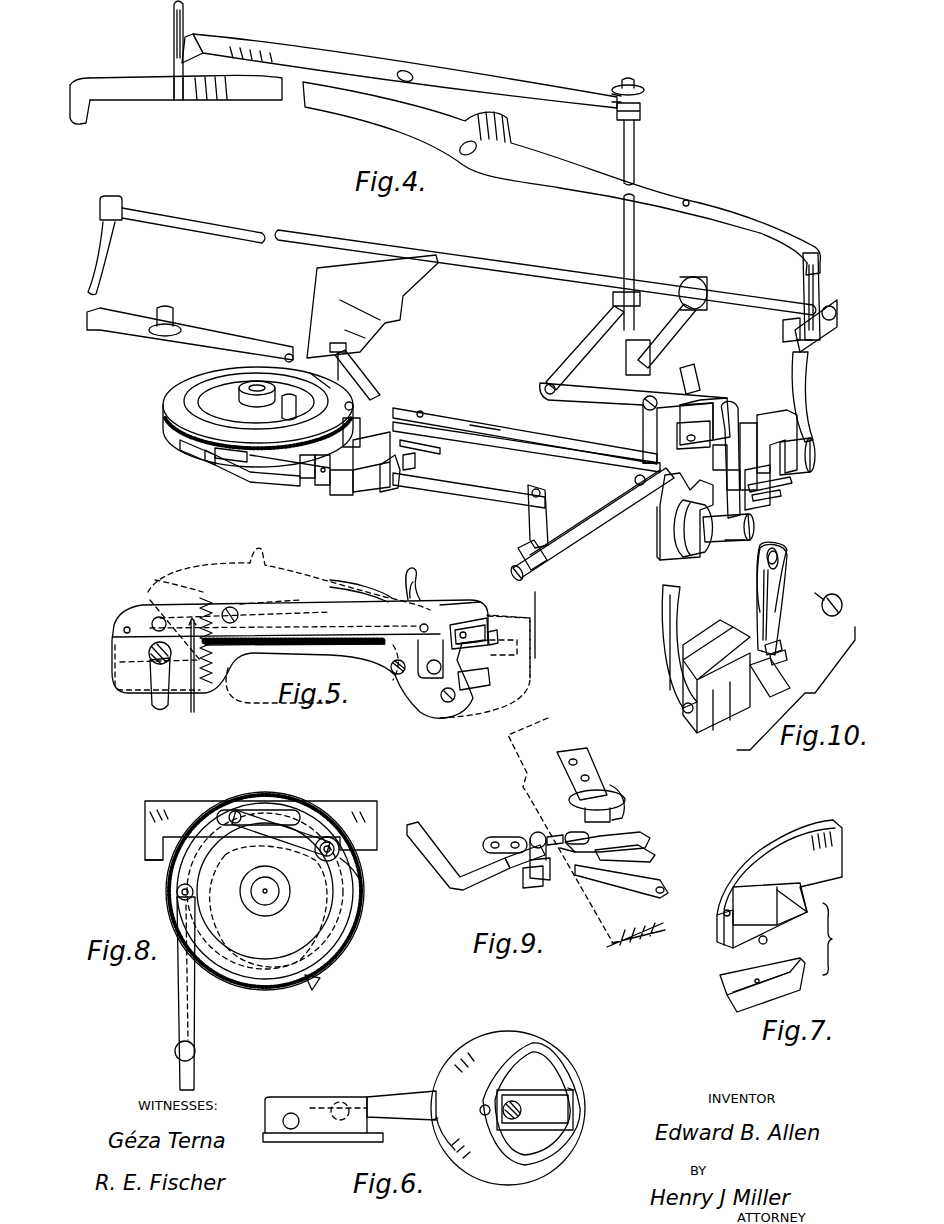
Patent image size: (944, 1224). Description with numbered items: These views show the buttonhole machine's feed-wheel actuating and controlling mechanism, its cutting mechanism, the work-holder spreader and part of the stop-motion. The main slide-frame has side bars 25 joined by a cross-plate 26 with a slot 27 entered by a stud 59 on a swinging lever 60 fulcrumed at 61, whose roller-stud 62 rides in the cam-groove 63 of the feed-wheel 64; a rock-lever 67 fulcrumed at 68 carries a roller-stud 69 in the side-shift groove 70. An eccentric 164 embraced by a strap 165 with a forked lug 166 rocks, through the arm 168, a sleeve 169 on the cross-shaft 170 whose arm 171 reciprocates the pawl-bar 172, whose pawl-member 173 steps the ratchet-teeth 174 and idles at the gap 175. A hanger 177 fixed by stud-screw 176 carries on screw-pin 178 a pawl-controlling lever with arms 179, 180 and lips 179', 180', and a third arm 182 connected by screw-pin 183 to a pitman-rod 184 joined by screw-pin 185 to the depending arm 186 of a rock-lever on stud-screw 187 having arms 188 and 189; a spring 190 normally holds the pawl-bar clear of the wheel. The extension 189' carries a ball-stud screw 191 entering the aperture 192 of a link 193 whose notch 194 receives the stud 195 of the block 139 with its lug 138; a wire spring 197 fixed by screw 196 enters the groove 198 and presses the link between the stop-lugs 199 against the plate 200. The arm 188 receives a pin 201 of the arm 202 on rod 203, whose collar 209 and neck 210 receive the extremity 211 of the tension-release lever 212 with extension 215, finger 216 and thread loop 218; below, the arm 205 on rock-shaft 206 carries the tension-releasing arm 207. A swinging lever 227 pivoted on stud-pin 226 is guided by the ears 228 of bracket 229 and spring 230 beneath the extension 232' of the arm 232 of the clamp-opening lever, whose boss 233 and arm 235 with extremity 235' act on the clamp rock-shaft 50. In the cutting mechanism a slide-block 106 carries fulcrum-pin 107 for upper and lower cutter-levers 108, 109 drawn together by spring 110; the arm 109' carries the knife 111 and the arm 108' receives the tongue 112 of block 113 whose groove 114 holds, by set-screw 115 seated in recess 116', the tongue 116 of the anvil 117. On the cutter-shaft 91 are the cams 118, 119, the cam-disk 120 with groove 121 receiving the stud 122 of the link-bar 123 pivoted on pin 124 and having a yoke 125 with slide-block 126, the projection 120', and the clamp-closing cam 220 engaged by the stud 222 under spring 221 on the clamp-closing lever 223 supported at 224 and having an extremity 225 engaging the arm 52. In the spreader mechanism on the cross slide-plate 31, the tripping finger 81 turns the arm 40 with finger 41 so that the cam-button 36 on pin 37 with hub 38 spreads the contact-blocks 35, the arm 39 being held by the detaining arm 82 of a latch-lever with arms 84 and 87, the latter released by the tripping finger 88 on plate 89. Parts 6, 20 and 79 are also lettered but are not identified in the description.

In FIG. 4, the thread-guiding loop 218 is at (172, 27).
In FIG. 4, the lateral extension 215 is at (193, 42).
In FIG. 4, the rock-lever 212 is at (462, 74).
In FIG. 4, the depending wedge-shaped finger 216 is at (178, 96).
In FIG. 4, the forwardly extending arm 235 is at (185, 96).
In FIG. 4, the downturned and rounded extremity 235' is at (94, 104).
In FIG. 4, the boss 233 is at (507, 125).
In FIG. 4, the rearward arm 232 is at (749, 214).
In FIG. 4, the lateral extension 232' is at (831, 261).
In FIG. 4, the collar 209 is at (650, 93).
In FIG. 4, the neck 210 is at (642, 110).
In FIG. 4, the rounded extremity 211 is at (617, 108).
In FIG. 4, the rod 203 is at (634, 262).
In FIG. 4, the rigid lateral arm 202 is at (590, 318).
In FIG. 4, the pin 201 is at (548, 383).
In FIG. 4, the rock-shaft 206 is at (310, 233).
In FIG. 4, the tension-releasing arm 207 is at (115, 238).
In FIG. 4, the lateral arm 205 is at (665, 326).
In FIG. 4, the side bars 25 is at (362, 267).
In FIG. 8, the side bars 25 is at (145, 855).
In FIG. 4, the cross-plate 26 is at (360, 306).
In FIG. 8, the cross-plate 26 is at (183, 802).
In FIG. 4, the fulcrum 68 is at (172, 308).
In FIG. 8, the fulcrum 68 is at (196, 1051).
In FIG. 4, the rock-lever 67 is at (230, 334).
In FIG. 8, the rock-lever 67 is at (178, 988).
In FIG. 4, the roller-stud 69 is at (290, 370).
In FIG. 8, the roller-stud 69 is at (178, 898).
In FIG. 4, the side-shift groove 70 is at (170, 387).
In FIG. 8, the side-shift groove 70 is at (232, 968).
In FIG. 4, the cam-groove 63 is at (205, 362).
In FIG. 8, the cam-groove 63 is at (232, 852).
In FIG. 4, the feed-wheel 64 is at (244, 395).
In FIG. 8, the feed-wheel 64 is at (274, 891).
In FIG. 4, the fulcrum 61 is at (281, 399).
In FIG. 8, the fulcrum 61 is at (340, 852).
In FIG. 4, the stud 59 is at (350, 366).
In FIG. 8, the stud 59 is at (235, 811).
In FIG. 4, the slot 27 is at (357, 348).
In FIG. 8, the slot 27 is at (300, 812).
In FIG. 4, the depending roller-stud 62 is at (345, 396).
In FIG. 8, the depending roller-stud 62 is at (277, 808).
In FIG. 4, the swinging lever 60 is at (356, 405).
In FIG. 8, the swinging lever 60 is at (328, 838).
In FIG. 4, the stud-screw 176 is at (355, 430).
In FIG. 4, the hanger 177 is at (370, 446).
In FIG. 4, the screw-pin 178 is at (350, 488).
In FIG. 4, the third angularly disposed arm 182 is at (405, 418).
In FIG. 4, the screw-pin 183 is at (440, 411).
In FIG. 4, the pitman-rod 184 is at (518, 433).
In FIG. 4, the screw-pin 185 is at (620, 446).
In FIG. 4, the spring 190 is at (430, 447).
In FIG. 4, the upturned lip 179' is at (424, 463).
In FIG. 4, the arm 179 is at (388, 482).
In FIG. 4, the reciprocating pawl-bar 172 is at (437, 488).
In FIG. 4, the ratchet-teeth 174 is at (177, 440).
In FIG. 8, the ratchet-teeth 174 is at (310, 975).
In FIG. 4, the gap 175 is at (280, 440).
In FIG. 8, the gap 175 is at (360, 870).
In FIG. 4, the support 79 is at (210, 461).
In FIG. 4, the reduced operative portion 173 is at (248, 462).
In FIG. 4, the upturned lip 180' is at (301, 475).
In FIG. 4, the arm 180 is at (327, 480).
In FIG. 4, the forwardly extending arm 188 is at (598, 390).
In FIG. 4, the stud-screw 187 is at (650, 395).
In FIG. 4, the cross-shaft 170 is at (685, 372).
In FIG. 4, the rearwardly extending arm 189 is at (705, 412).
In FIG. 4, the lateral extension 189' is at (703, 406).
In FIG. 4, the plate 200 is at (688, 432).
In FIG. 4, the depending arm 186 is at (658, 440).
In FIG. 4, the ball-stud screw 191 is at (740, 418).
In FIG. 10, the ball-stud screw 191 is at (833, 597).
In FIG. 4, the block 139 is at (770, 410).
In FIG. 10, the block 139 is at (718, 677).
In FIG. 4, the depending link 193 is at (752, 440).
In FIG. 10, the depending link 193 is at (780, 650).
In FIG. 4, the screw 196 is at (722, 465).
In FIG. 4, the wire spring 197 is at (725, 478).
In FIG. 4, the groove 198 is at (748, 512).
In FIG. 4, the stop-lugs 199 is at (740, 485).
In FIG. 4, the stud 195 is at (758, 495).
In FIG. 10, the stud 195 is at (757, 688).
In FIG. 4, the lateral notch 194 is at (765, 500).
In FIG. 10, the lateral notch 194 is at (782, 660).
In FIG. 4, the rocking sleeve 169 is at (580, 488).
In FIG. 4, the rearwardly extending arm 168 is at (640, 485).
In FIG. 4, the forked lug 166 is at (663, 493).
In FIG. 4, the eccentric 164 is at (700, 548).
In FIG. 4, the strap 165 is at (678, 560).
In FIG. 4, the upwardly extending arm 171 is at (528, 528).
In FIG. 4, the shaft 6 is at (738, 538).
In FIG. 4, the aperture 192 is at (772, 558).
In FIG. 10, the aperture 192 is at (772, 557).
In FIG. 4, the spaced ears 228 is at (783, 334).
In FIG. 4, the guide-bracket 229 is at (810, 343).
In FIG. 4, the spring 230 is at (812, 360).
In FIG. 4, the swinging lever 227 is at (812, 390).
In FIG. 10, the swinging lever 227 is at (678, 612).
In FIG. 5, the lower cutter-lever 109 is at (321, 661).
In FIG. 5, the upper cutter-lever 108 is at (289, 585).
In FIG. 5, the cutter-lever actuating cam 118 is at (158, 592).
In FIG. 5, the support 224 is at (230, 605).
In FIG. 5, the clamp-closing lever 223 is at (282, 600).
In FIG. 5, the down-turned forward extremity 225 is at (403, 585).
In FIG. 5, the forward arm 108' is at (460, 593).
In FIG. 7, the forward arm 108' is at (779, 884).
In FIG. 5, the tongue 112 is at (464, 625).
In FIG. 7, the tongue 112 is at (765, 927).
In FIG. 5, the cutter-lever actuating cam 119 is at (125, 627).
In FIG. 5, the lateral stud 222 is at (150, 618).
In FIG. 5, the clamp rock-shaft 50 is at (418, 625).
In FIG. 5, the transversely adjustable block 113 is at (475, 630).
In FIG. 7, the transversely adjustable block 113 is at (797, 925).
In FIG. 5, the tongue 116 is at (509, 634).
In FIG. 7, the tongue 116 is at (771, 985).
In FIG. 5, the frame 20 is at (538, 642).
In FIG. 5, the cutter-shaft 91 is at (149, 651).
In FIG. 6, the cutter-shaft 91 is at (516, 1100).
In FIG. 5, the clamp-closing cam 220 is at (150, 660).
In FIG. 5, the spring 110 is at (212, 640).
In FIG. 5, the lateral arm 52 is at (390, 640).
In FIG. 5, the block or anvil 117 is at (470, 649).
In FIG. 7, the block or anvil 117 is at (772, 982).
In FIG. 5, the spring 221 is at (193, 700).
In FIG. 5, the fulcrum-pin 107 is at (395, 675).
In FIG. 6, the fulcrum-pin 107 is at (285, 1115).
In FIG. 5, the forwardly projecting arm 109' is at (431, 699).
In FIG. 5, the cutting knife 111 is at (460, 676).
In FIG. 10, the lug 138 is at (735, 712).
In FIG. 10, the stud-pin 226 is at (683, 708).
In FIG. 9, the cross slide-plate 31 is at (596, 912).
In FIG. 9, the tripping finger 81 is at (458, 878).
In FIG. 9, the arm 40 is at (505, 868).
In FIG. 9, the contact-blocks 35 is at (505, 840).
In FIG. 9, the cam-button 36 is at (535, 834).
In FIG. 9, the arm 39 is at (553, 837).
In FIG. 9, the notched detaining arm 82 is at (600, 845).
In FIG. 9, the rocking pin 37 is at (565, 850).
In FIG. 9, the third lateral arm 87 is at (638, 848).
In FIG. 9, the second arm 84 is at (645, 870).
In FIG. 9, the hub 38 is at (550, 875).
In FIG. 9, the lateral apertured finger 41 is at (528, 878).
In FIG. 9, the stationary tripping finger 88 is at (625, 800).
In FIG. 9, the plate 89 is at (592, 760).
In FIG. 7, the longitudinal dove-tail shaped groove 114 is at (722, 945).
In FIG. 7, the set-screw 115 is at (766, 942).
In FIG. 7, the recess 116' is at (743, 968).
In FIG. 6, the fulcrum-carrying slide-block 106 is at (300, 1102).
In FIG. 6, the pivotal pin 124 is at (338, 1103).
In FIG. 6, the link-bar 123 is at (403, 1093).
In FIG. 6, the projection 120' is at (422, 1131).
In FIG. 6, the cam-disk 120 is at (508, 1108).
In FIG. 6, the cam-groove 121 is at (556, 1058).
In FIG. 6, the slide-block 126 is at (535, 1110).
In FIG. 6, the yoke 125 is at (576, 1092).
In FIG. 6, the lateral stud 122 is at (482, 1115).